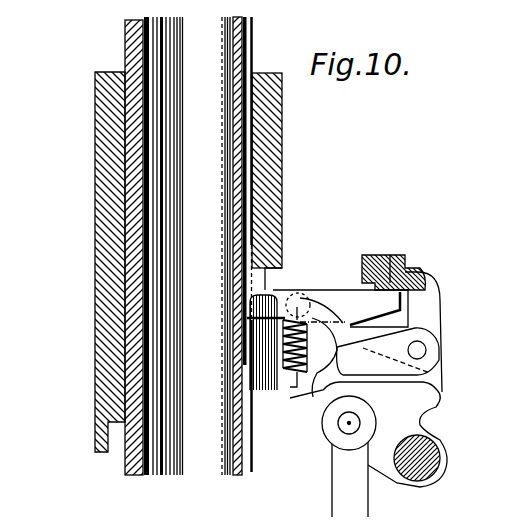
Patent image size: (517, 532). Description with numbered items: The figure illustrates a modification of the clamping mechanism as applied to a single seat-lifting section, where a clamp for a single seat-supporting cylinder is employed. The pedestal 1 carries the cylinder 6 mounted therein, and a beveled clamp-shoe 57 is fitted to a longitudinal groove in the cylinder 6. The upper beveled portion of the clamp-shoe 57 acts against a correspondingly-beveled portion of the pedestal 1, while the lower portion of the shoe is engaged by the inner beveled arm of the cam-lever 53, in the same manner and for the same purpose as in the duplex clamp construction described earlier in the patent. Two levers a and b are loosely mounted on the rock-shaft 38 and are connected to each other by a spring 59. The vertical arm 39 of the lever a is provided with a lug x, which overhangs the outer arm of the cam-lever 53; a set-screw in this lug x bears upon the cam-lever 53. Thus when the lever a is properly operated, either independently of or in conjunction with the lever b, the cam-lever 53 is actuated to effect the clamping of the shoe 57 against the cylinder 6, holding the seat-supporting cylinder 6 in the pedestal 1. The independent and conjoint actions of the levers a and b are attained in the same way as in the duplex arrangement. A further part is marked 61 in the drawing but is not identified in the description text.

The cylinder 6 is at (125, 190).
The pedestal 1 is at (283, 155).
The beveled clamp-shoe 57 is at (262, 265).
The cam-lever 53 is at (327, 290).
The spring 59 is at (283, 343).
The lug x is at (370, 255).
The vertical arm 39 is at (422, 314).
The lever a is at (428, 323).
The rock-shaft 38 is at (417, 350).
The lever b is at (375, 365).
The guide rod 61 is at (258, 461).